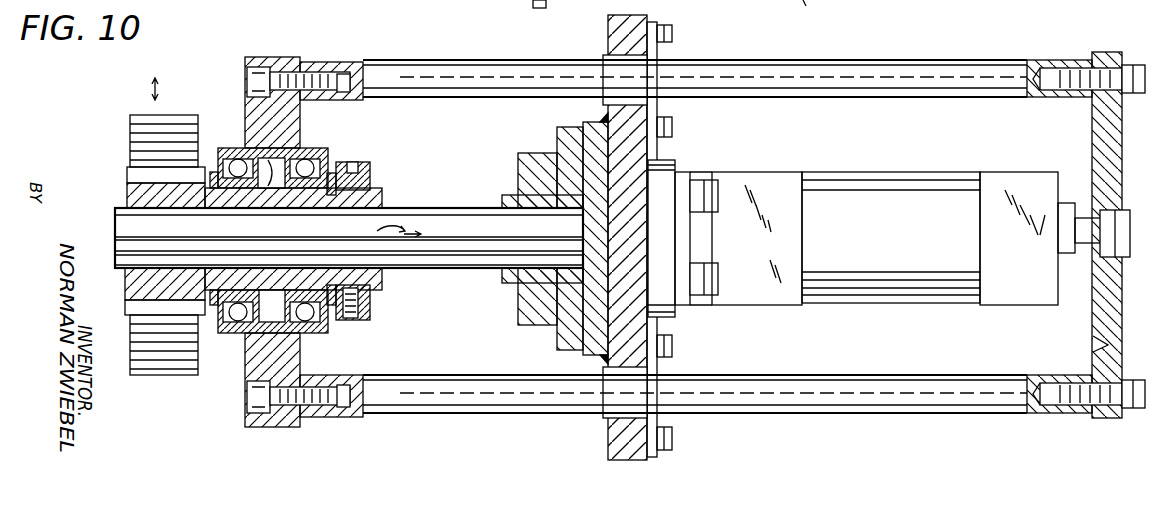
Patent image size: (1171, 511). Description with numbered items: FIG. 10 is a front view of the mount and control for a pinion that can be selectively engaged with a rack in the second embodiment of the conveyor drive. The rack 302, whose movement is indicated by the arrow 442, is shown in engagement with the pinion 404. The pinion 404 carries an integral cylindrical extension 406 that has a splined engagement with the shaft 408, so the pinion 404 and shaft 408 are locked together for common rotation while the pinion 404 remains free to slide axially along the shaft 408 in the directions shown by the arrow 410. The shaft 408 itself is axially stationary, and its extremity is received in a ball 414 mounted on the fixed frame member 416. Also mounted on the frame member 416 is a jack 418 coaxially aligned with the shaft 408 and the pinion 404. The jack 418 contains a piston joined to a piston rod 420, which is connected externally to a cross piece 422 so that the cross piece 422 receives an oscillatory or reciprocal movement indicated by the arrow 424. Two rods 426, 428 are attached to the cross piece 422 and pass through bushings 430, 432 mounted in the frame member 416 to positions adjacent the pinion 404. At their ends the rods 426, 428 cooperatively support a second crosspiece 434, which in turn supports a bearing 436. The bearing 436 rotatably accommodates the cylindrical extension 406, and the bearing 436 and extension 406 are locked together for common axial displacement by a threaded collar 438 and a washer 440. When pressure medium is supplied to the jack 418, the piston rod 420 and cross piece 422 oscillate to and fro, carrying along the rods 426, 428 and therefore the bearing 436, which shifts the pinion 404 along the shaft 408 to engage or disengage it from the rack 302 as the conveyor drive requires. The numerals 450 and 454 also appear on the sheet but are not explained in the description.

The rack 302 is at (178, 115).
The pinion 404 is at (138, 176).
The cylindrical extension 406 is at (273, 158).
The shaft 408 is at (464, 222).
The arrow 410 is at (379, 230).
The ball 414 is at (562, 142).
The fixed frame member 416 is at (608, 37).
The jack 418 is at (848, 303).
The piston rod 420 is at (1085, 260).
The cross piece 422 is at (1108, 296).
The arrow 424 is at (1097, 348).
The rod 426 is at (953, 363).
The rod 428 is at (866, 88).
The bushing 430 is at (610, 417).
The bushing 432 is at (605, 60).
The crosspiece 434 is at (297, 117).
The bearing 436 is at (226, 335).
The threaded collar 438 is at (367, 168).
The washer 440 is at (334, 165).
The arrow 442 is at (150, 87).
The element 450 is at (825, 9).
The element 454 is at (468, 0).